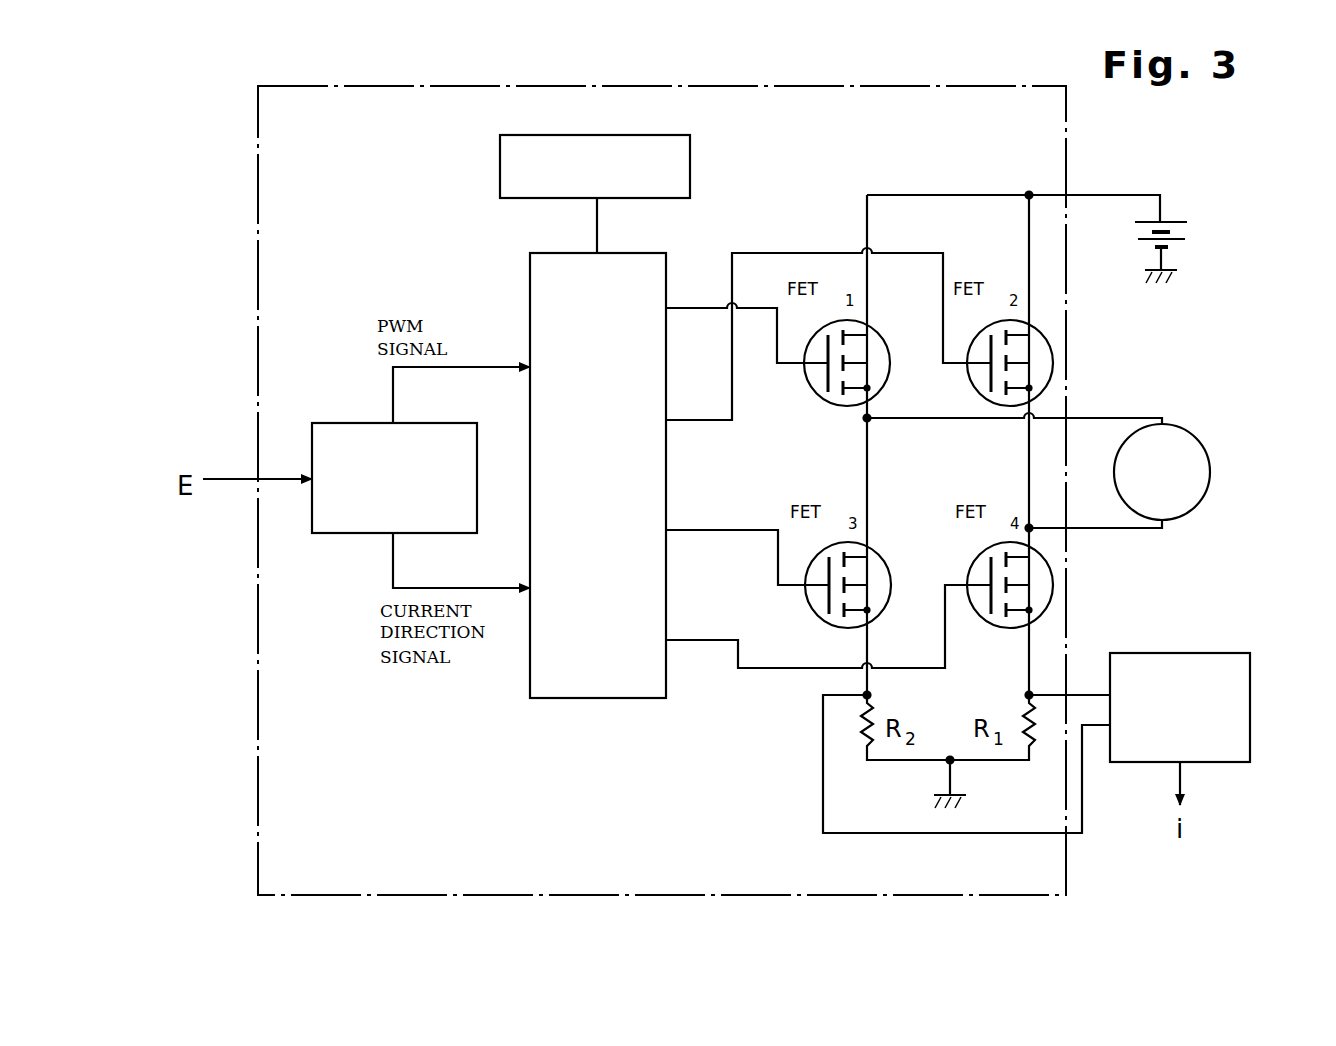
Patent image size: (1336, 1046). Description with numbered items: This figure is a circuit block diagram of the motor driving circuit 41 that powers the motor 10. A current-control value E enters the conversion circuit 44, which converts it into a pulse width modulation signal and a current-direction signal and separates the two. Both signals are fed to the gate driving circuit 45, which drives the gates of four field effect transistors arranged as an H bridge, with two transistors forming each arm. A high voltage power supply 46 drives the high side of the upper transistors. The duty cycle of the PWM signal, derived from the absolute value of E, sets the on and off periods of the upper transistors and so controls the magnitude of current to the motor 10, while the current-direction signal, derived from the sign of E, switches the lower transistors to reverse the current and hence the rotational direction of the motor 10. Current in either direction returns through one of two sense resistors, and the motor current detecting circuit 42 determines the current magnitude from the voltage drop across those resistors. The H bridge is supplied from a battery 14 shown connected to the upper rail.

The motor 10 is at (1180, 427).
The battery 14 is at (1172, 212).
The motor driving circuit 41 is at (1066, 178).
The motor current detecting circuit 42 is at (1178, 652).
The conversion circuit 44 is at (357, 534).
The gate driving circuit 45 is at (588, 699).
The high voltage power supply 46 is at (500, 168).